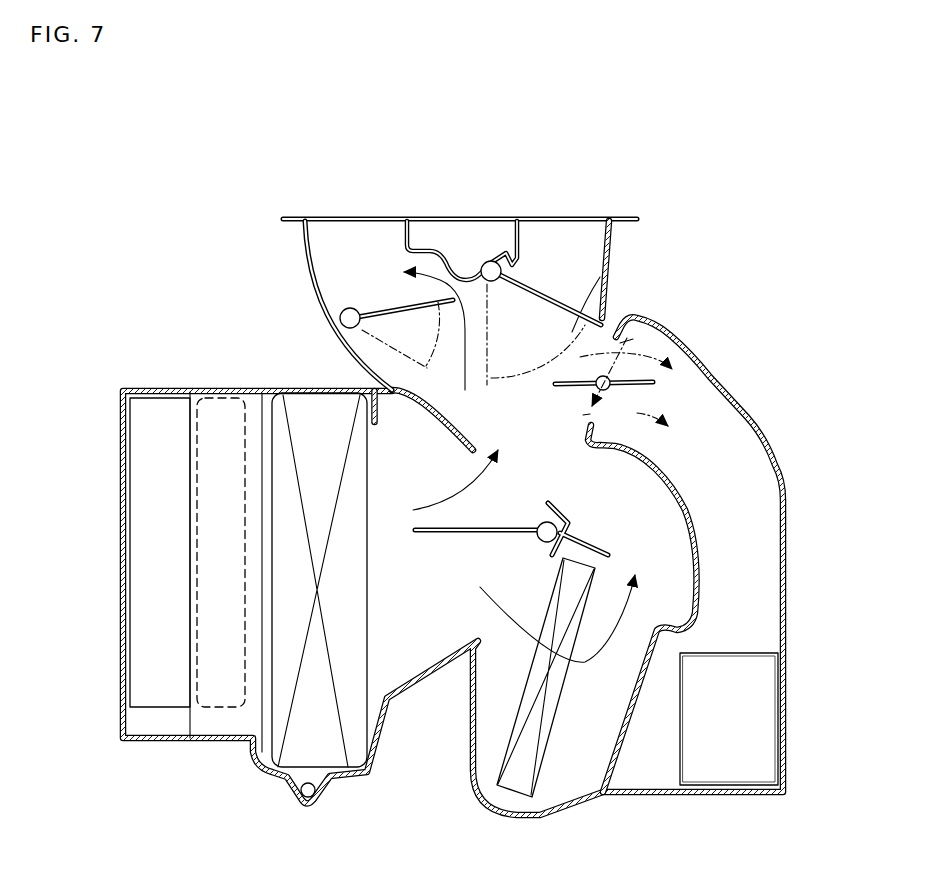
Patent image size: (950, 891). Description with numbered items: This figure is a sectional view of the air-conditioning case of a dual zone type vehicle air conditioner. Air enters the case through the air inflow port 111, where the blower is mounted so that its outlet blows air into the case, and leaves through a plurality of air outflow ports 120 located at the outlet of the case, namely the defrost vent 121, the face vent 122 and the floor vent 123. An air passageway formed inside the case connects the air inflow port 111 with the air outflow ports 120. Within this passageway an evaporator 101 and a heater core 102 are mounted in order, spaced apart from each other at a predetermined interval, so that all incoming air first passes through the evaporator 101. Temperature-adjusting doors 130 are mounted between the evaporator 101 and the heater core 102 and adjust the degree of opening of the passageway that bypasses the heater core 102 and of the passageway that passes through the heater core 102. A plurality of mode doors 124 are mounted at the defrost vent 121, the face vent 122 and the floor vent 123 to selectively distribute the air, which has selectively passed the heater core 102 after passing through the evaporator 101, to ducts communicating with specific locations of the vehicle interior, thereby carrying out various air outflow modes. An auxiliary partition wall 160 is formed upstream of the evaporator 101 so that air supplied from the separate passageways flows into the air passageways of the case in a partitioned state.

The evaporator 101 is at (302, 748).
The heater core 102 is at (520, 775).
The air inflow port 111 is at (160, 710).
The air outflow ports 120 is at (547, 143).
The defrost vent 121 is at (358, 247).
The face vent 122 is at (558, 250).
The floor vent 123 is at (752, 722).
The mode doors 124 is at (393, 305).
The temperature-adjusting doors 130 is at (440, 535).
The auxiliary partition wall 160 is at (190, 483).